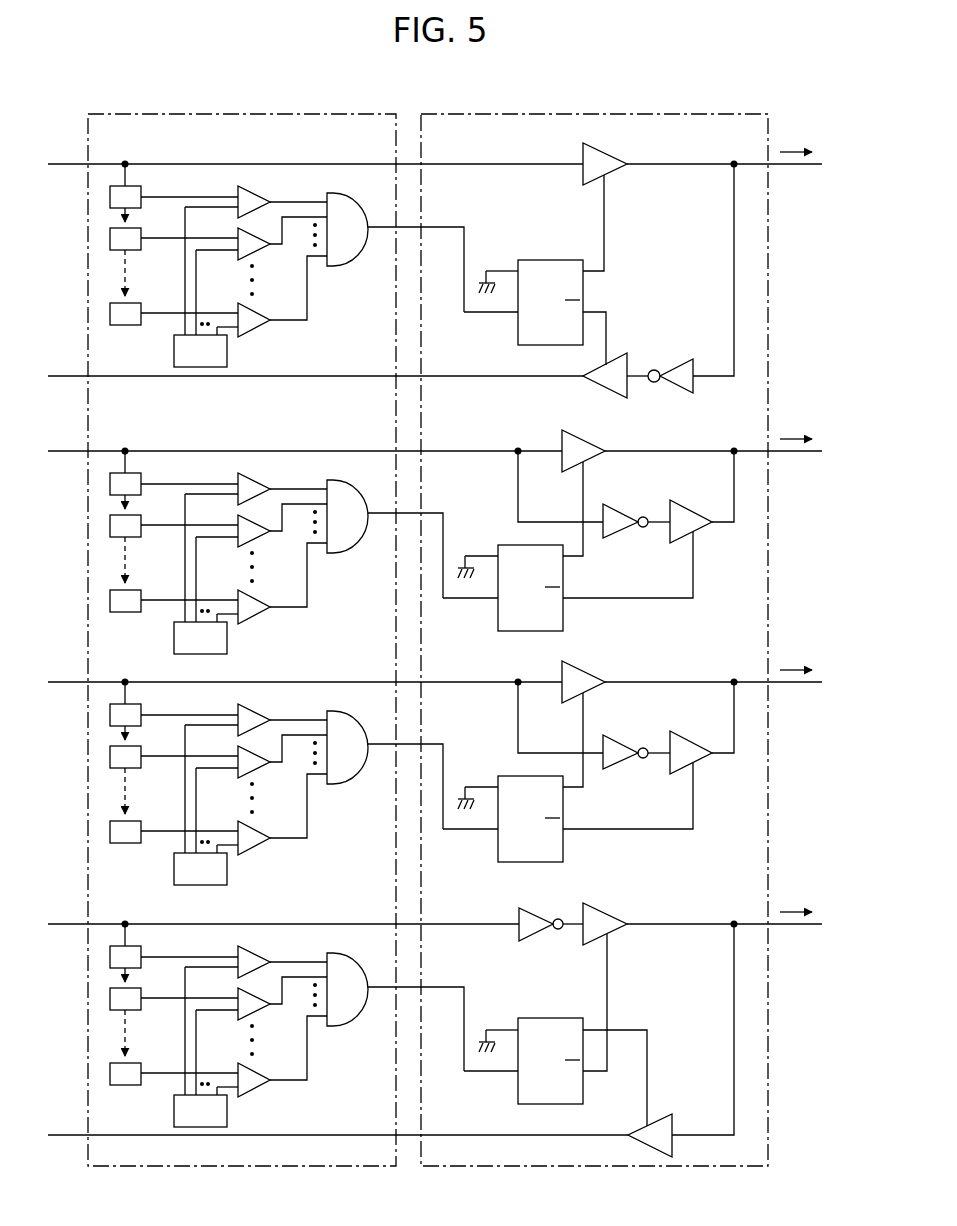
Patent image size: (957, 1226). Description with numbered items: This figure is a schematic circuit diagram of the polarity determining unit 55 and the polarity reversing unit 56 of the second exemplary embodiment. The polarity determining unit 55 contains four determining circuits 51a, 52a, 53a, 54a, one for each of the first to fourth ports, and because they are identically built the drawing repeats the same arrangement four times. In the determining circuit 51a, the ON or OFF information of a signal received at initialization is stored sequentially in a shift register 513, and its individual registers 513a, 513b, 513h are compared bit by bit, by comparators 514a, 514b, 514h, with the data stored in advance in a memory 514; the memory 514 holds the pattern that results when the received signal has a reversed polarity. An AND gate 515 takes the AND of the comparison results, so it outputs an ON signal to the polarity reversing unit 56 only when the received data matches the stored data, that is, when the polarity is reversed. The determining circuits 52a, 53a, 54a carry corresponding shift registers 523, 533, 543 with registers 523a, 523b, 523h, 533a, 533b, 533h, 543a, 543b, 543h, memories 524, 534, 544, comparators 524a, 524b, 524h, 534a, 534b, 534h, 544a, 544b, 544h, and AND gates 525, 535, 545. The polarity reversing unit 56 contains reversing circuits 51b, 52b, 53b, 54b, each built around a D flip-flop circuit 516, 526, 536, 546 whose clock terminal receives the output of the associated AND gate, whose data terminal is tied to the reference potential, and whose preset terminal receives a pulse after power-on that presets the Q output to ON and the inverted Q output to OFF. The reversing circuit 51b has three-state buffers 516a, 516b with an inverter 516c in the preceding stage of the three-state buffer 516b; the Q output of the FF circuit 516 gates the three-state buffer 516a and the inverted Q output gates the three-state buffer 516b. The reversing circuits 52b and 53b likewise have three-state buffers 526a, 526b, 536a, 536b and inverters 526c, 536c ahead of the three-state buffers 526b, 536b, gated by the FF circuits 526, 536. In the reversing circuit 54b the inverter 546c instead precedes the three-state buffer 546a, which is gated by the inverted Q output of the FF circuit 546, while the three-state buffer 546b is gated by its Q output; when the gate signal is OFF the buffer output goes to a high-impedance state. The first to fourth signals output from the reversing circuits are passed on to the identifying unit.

The polarity determining unit 55 is at (233, 114).
The polarity reversing unit 56 is at (490, 114).
The determining circuit 51a is at (319, 156).
The reversing circuit 51b is at (683, 156).
The determining circuit 52a is at (319, 444).
The reversing circuit 52b is at (689, 444).
The determining circuit 53a is at (319, 675).
The reversing circuit 53b is at (689, 675).
The determining circuit 54a is at (319, 912).
The reversing circuit 54b is at (689, 905).
The shift register 513 is at (140, 180).
The register 513a is at (143, 188).
The register 513b is at (141, 250).
The register 513h is at (127, 326).
The memory 514 is at (227, 354).
The comparator 514a is at (252, 192).
The comparator 514b is at (238, 262).
The comparator 514h is at (254, 312).
The AND gate 515 is at (335, 193).
The FF circuit 516 is at (550, 260).
The three-state buffer 516a is at (605, 144).
The three-state buffer 516b is at (630, 360).
The inverter 516c is at (686, 362).
The shift register 523 is at (138, 466).
The register 523a is at (143, 475).
The register 523b is at (141, 537).
The register 523h is at (127, 613).
The memory 524 is at (227, 641).
The comparator 524a is at (252, 479).
The comparator 524b is at (238, 549).
The comparator 524h is at (254, 599).
The AND gate 525 is at (335, 480).
The FF circuit 526 is at (515, 545).
The three-state buffer 526a is at (590, 432).
The three-state buffer 526b is at (688, 509).
The inverter 526c is at (628, 498).
The shift register 533 is at (138, 697).
The register 533a is at (143, 706).
The register 533b is at (141, 768).
The register 533h is at (127, 844).
The memory 534 is at (227, 872).
The comparator 534a is at (252, 710).
The comparator 534b is at (238, 780).
The comparator 534h is at (254, 830).
The AND gate 535 is at (335, 711).
The FF circuit 536 is at (515, 776).
The three-state buffer 536a is at (590, 663).
The three-state buffer 536b is at (688, 740).
The inverter 536c is at (628, 729).
The shift register 543 is at (138, 938).
The register 543a is at (143, 948).
The register 543b is at (141, 1010).
The register 543h is at (127, 1086).
The memory 544 is at (227, 1114).
The comparator 544a is at (252, 952).
The comparator 544b is at (238, 1022).
The comparator 544h is at (254, 1072).
The AND gate 545 is at (335, 953).
The FF circuit 546 is at (550, 1018).
The three-state buffer 546a is at (616, 900).
The three-state buffer 546b is at (665, 1118).
The inverter 546c is at (546, 900).